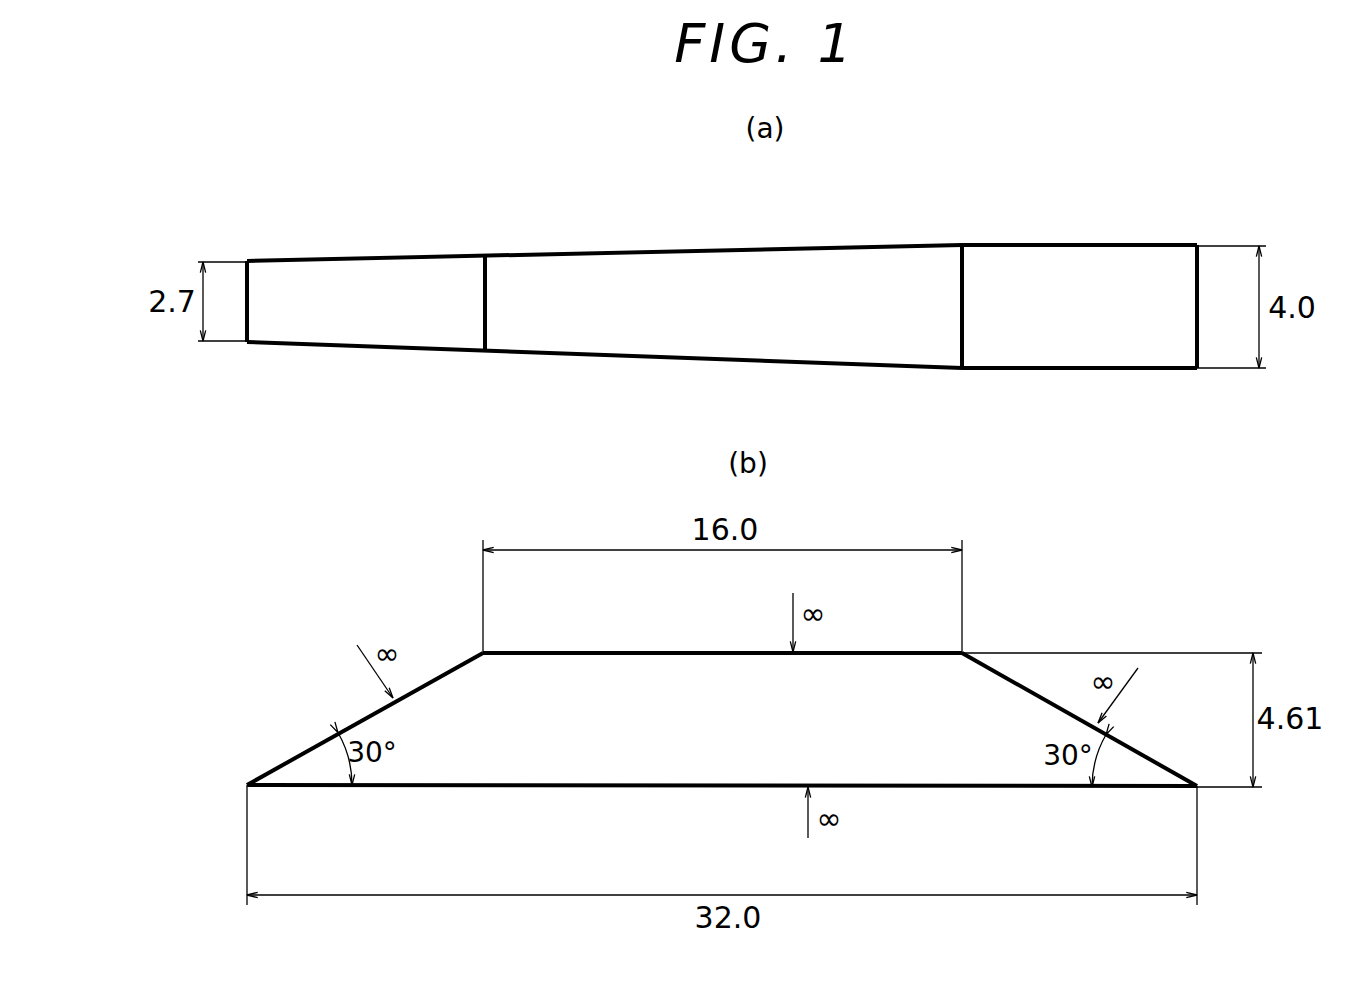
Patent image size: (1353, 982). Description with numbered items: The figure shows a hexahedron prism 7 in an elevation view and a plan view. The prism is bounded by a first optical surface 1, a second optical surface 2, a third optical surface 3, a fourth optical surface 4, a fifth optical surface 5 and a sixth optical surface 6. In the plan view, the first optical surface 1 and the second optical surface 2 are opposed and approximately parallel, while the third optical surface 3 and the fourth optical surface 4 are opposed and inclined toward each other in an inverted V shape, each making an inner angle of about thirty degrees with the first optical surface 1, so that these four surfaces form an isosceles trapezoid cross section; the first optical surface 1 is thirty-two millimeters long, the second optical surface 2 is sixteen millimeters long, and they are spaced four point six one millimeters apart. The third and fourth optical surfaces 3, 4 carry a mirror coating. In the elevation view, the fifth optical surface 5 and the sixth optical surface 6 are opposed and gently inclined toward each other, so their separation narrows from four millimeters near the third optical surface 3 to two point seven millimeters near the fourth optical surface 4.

The first optical surface 1 is at (596, 788).
The second optical surface 2 is at (580, 652).
The third optical surface 3 is at (1038, 691).
The fourth optical surface 4 is at (310, 741).
The fifth optical surface 5 is at (845, 244).
The sixth optical surface 6 is at (830, 366).
The hexahedron prism 7 is at (1062, 215).